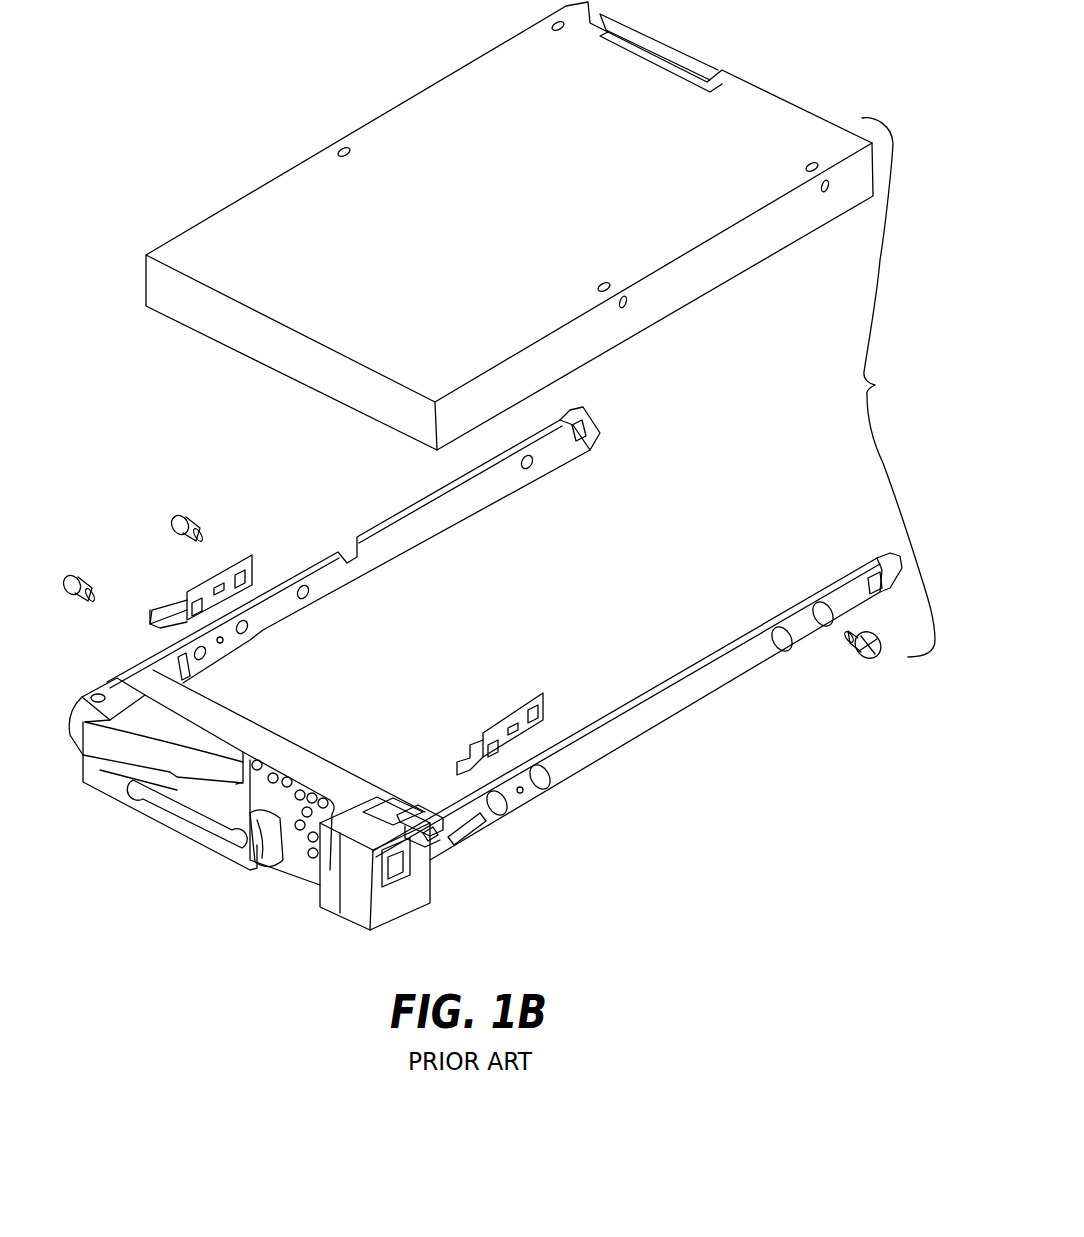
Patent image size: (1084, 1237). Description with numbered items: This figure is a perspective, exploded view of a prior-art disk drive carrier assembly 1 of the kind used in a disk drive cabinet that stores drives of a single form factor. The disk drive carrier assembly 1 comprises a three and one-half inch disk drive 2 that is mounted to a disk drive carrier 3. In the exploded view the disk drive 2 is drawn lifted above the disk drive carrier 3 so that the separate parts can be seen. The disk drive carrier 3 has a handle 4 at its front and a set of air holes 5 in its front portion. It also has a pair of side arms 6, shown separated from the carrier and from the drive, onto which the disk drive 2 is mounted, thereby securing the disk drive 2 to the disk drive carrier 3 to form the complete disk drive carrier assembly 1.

The disk drive carrier assembly 1 is at (263, 86).
The disk drive 2 is at (509, 226).
The disk drive carrier 3 is at (578, 843).
The handle 4 is at (122, 803).
The air holes 5 is at (303, 838).
The side arms 6 is at (417, 530).